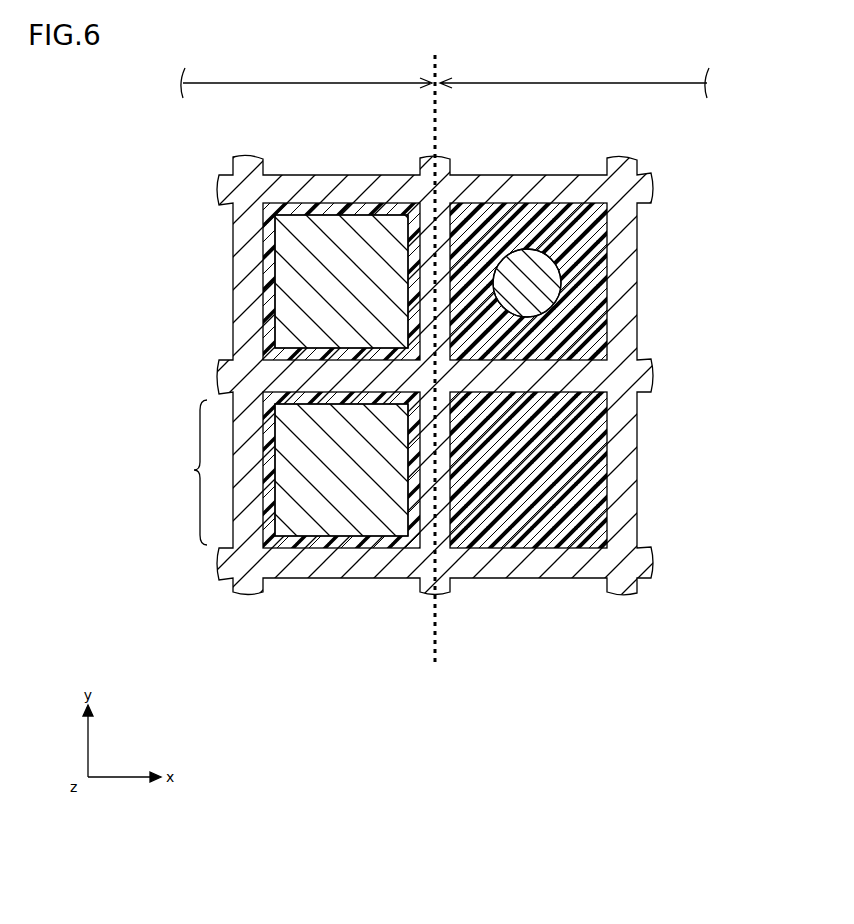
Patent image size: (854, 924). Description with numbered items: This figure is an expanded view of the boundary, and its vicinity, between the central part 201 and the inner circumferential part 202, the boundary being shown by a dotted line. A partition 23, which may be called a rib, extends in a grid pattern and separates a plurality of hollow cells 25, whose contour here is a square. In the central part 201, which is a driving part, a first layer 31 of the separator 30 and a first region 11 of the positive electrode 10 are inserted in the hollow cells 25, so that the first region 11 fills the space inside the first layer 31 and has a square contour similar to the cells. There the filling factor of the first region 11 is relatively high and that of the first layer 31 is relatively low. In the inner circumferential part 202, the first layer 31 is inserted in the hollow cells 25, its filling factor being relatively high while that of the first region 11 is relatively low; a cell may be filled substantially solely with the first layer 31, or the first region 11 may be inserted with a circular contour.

The partition 23 is at (240, 260).
The hollow cells 25 is at (188, 472).
The first region 11 is at (427, 389).
The positive electrode 10 is at (545, 281).
The first layer 31 is at (490, 388).
The separator 30 is at (586, 313).
The central part 201 is at (306, 76).
The inner circumferential part 202 is at (574, 76).